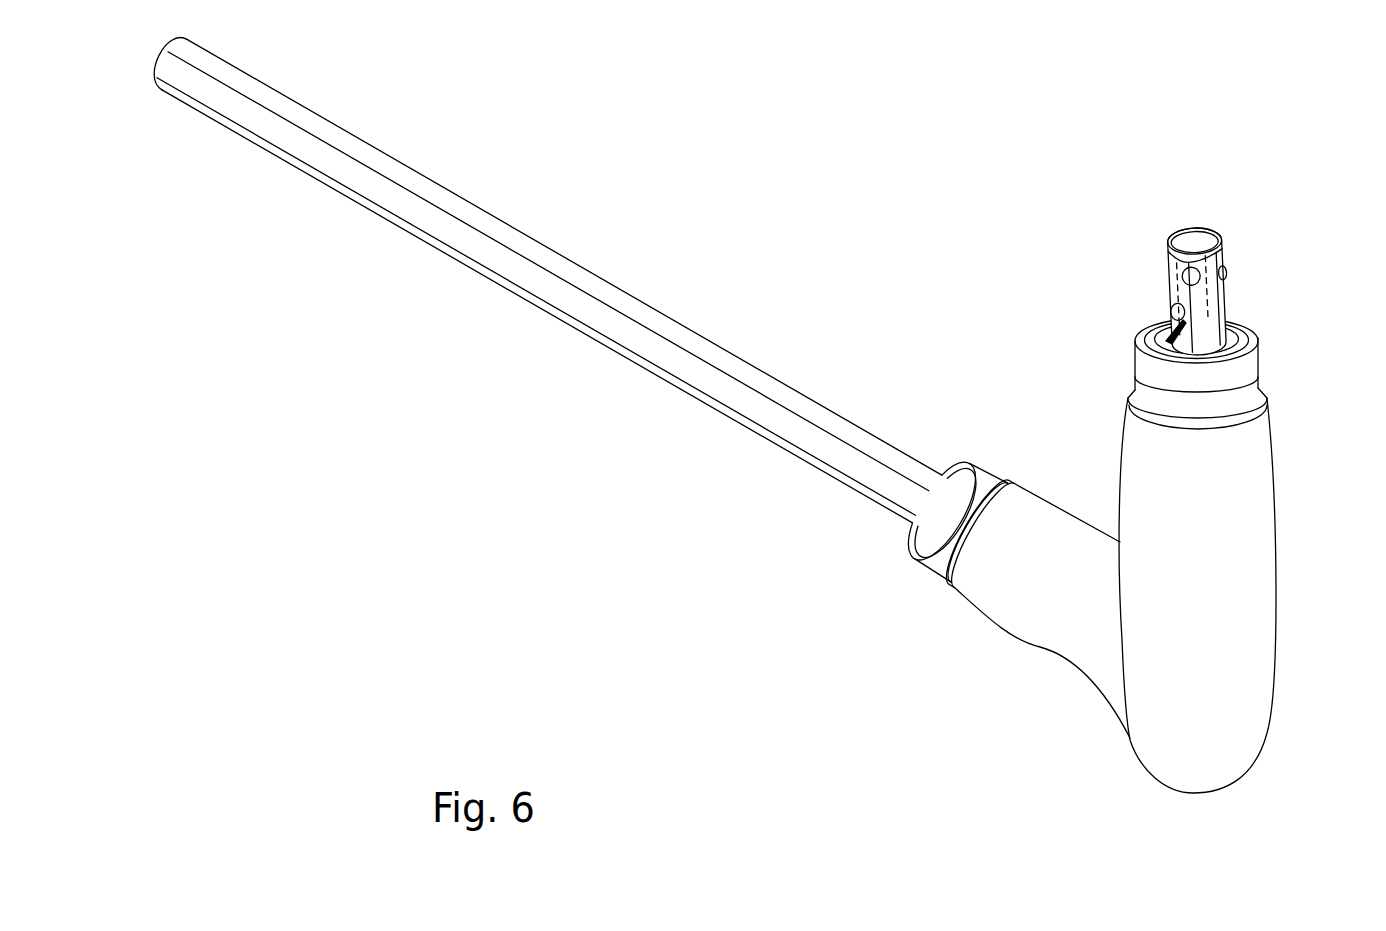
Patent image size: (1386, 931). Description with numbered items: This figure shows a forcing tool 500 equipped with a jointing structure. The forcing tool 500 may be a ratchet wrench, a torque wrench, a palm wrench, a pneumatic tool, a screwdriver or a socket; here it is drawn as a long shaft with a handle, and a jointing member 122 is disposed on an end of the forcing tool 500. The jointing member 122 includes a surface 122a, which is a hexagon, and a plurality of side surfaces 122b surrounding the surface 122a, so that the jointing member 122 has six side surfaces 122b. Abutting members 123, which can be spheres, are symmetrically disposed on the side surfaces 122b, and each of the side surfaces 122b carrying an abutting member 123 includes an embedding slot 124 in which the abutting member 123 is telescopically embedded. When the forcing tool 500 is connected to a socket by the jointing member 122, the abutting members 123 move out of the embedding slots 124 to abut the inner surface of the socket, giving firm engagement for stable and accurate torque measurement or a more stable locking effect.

The forcing tool 500 is at (757, 214).
The jointing member 122 is at (1202, 226).
The surface 122a is at (1192, 240).
The side surfaces 122b is at (1212, 267).
The abutting members 123 is at (1183, 275).
The embedding slot 124 is at (1170, 340).